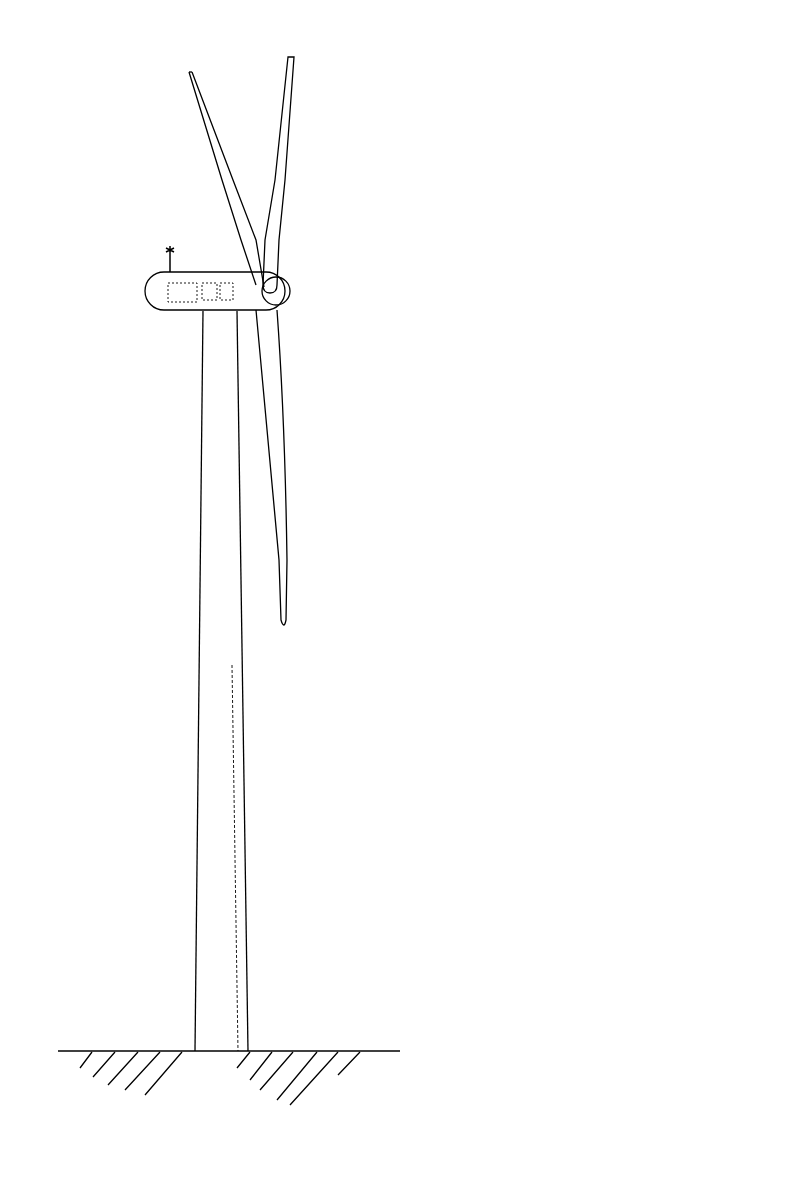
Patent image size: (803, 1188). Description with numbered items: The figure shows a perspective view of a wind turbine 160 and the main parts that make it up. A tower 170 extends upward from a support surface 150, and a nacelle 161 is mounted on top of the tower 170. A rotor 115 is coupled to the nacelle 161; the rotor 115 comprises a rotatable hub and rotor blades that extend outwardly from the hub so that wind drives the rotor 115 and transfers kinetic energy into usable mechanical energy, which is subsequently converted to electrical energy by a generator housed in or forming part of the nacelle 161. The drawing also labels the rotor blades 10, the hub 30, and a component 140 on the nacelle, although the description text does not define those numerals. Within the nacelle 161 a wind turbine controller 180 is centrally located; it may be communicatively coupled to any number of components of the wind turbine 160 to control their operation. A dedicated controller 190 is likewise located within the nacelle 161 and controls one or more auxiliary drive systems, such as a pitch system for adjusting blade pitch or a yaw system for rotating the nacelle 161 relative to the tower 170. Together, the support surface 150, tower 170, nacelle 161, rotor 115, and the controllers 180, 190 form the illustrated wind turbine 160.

The rotor blade 10 is at (282, 92).
The hub 30 is at (284, 286).
The rotor 115 is at (291, 270).
The sensor 140 is at (180, 297).
The support surface 150 is at (130, 1050).
The wind turbine 160 is at (395, 128).
The nacelle 161 is at (182, 313).
The tower 170 is at (210, 780).
The wind turbine controller 180 is at (227, 298).
The dedicated controller 190 is at (207, 298).